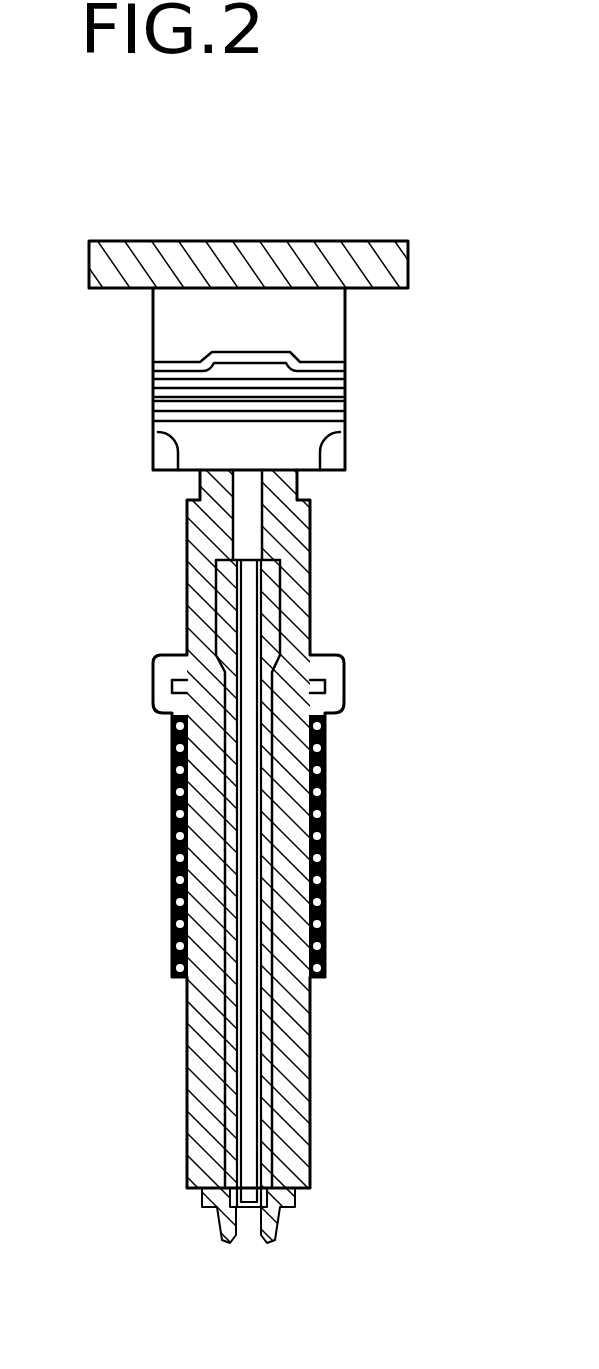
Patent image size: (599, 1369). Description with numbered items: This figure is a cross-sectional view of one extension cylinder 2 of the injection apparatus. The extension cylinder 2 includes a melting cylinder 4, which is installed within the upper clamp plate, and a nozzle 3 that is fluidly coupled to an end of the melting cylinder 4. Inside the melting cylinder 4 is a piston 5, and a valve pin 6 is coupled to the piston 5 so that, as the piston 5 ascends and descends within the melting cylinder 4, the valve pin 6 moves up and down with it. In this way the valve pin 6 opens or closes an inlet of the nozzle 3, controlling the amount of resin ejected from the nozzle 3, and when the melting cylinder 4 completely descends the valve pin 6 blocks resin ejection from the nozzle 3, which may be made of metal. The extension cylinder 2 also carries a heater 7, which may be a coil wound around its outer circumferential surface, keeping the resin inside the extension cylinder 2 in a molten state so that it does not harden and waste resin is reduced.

The extension cylinder 2 is at (302, 527).
The nozzle 3 is at (300, 1198).
The melting cylinder 4 is at (297, 313).
The piston 5 is at (230, 367).
The valve pin 6 is at (250, 1074).
The heater 7 is at (327, 838).